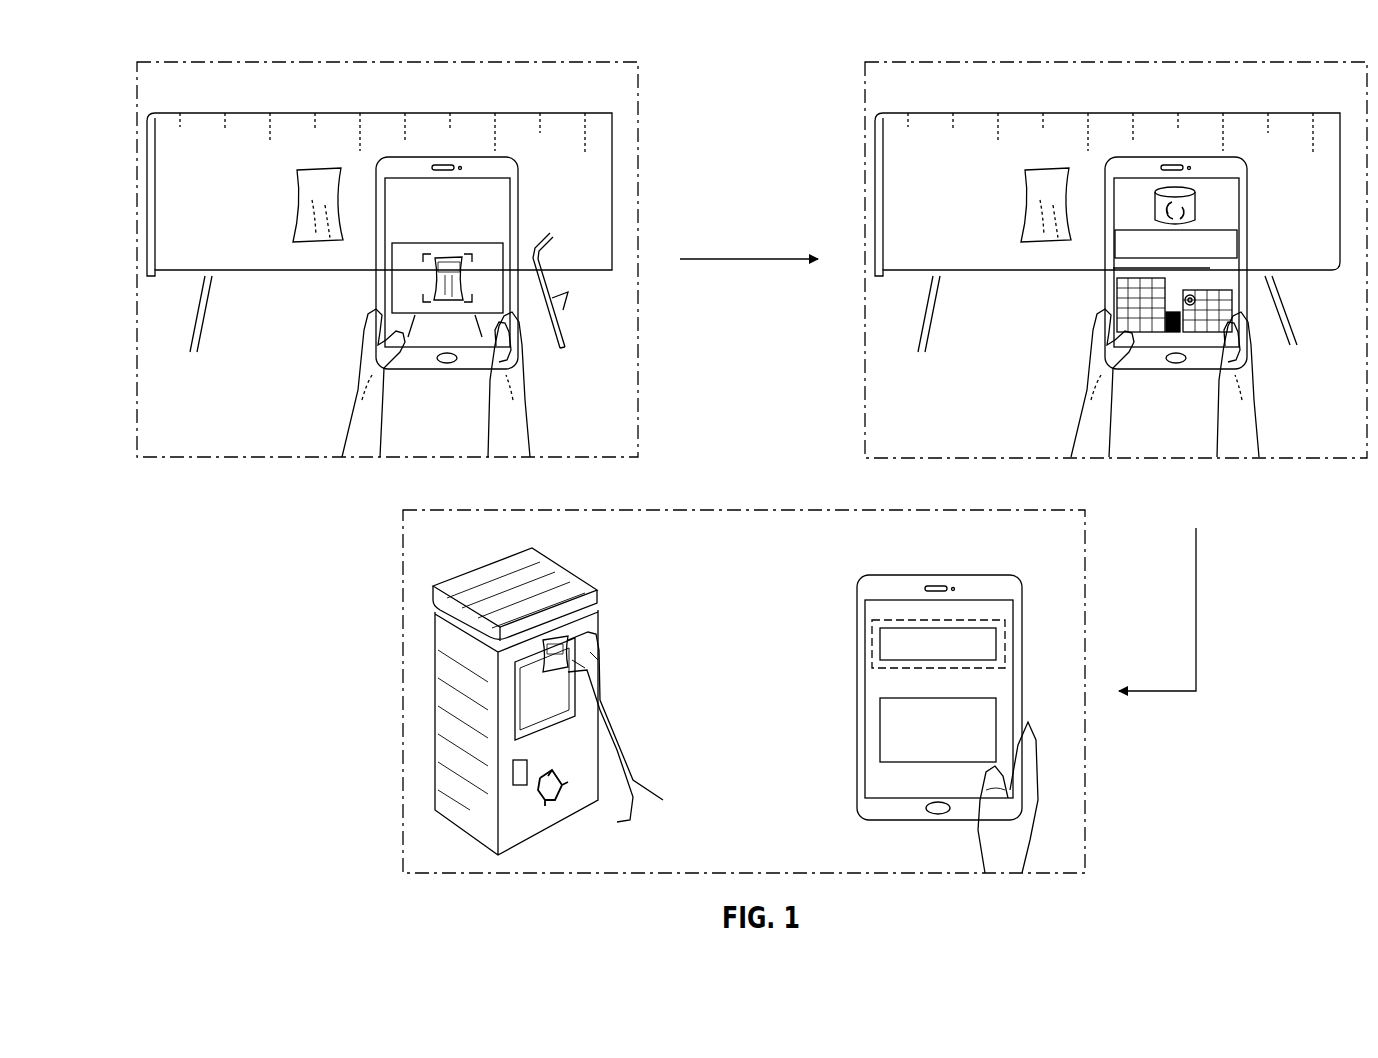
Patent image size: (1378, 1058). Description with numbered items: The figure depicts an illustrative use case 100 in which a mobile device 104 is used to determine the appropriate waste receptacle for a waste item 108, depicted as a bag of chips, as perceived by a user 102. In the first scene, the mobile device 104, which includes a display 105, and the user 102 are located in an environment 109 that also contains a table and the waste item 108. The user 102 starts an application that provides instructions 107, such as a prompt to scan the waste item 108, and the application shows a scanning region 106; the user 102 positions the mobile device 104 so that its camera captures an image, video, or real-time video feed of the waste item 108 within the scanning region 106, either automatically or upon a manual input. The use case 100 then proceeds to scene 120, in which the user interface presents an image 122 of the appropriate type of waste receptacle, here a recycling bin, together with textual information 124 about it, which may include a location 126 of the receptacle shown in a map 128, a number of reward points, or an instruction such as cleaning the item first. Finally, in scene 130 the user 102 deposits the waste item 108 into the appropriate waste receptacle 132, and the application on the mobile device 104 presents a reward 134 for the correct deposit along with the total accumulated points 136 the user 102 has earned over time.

The use case 100 is at (148, 48).
The user 102 is at (575, 62).
The mobile device 104 is at (520, 186).
The display 105 is at (490, 258).
The scanning region 106 is at (502, 290).
The instructions 107 is at (492, 180).
The waste item 108 is at (297, 206).
The environment 109 is at (494, 101).
The scene 120 is at (1302, 62).
The image 122 is at (1202, 205).
The textual information 124 is at (1242, 244).
The location 126 is at (1215, 306).
The map 128 is at (1200, 300).
The scene 130 is at (470, 510).
The waste receptacle 132 is at (588, 575).
The reward 134 is at (878, 648).
The total accumulated points 136 is at (880, 732).